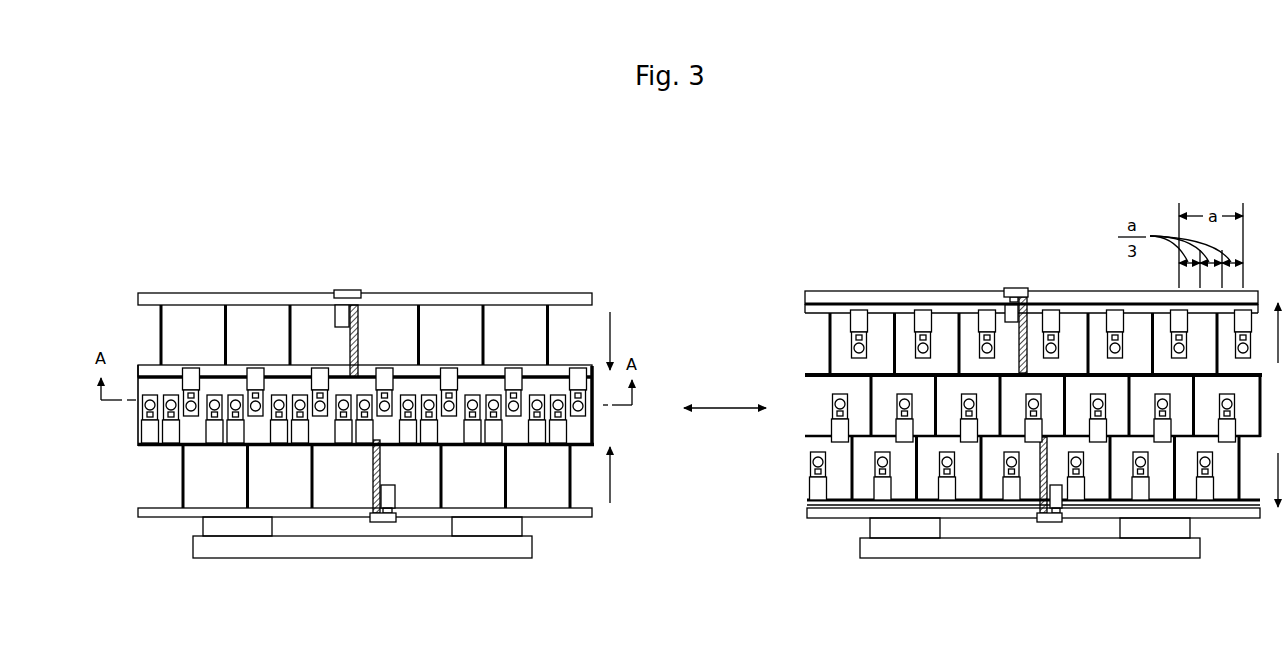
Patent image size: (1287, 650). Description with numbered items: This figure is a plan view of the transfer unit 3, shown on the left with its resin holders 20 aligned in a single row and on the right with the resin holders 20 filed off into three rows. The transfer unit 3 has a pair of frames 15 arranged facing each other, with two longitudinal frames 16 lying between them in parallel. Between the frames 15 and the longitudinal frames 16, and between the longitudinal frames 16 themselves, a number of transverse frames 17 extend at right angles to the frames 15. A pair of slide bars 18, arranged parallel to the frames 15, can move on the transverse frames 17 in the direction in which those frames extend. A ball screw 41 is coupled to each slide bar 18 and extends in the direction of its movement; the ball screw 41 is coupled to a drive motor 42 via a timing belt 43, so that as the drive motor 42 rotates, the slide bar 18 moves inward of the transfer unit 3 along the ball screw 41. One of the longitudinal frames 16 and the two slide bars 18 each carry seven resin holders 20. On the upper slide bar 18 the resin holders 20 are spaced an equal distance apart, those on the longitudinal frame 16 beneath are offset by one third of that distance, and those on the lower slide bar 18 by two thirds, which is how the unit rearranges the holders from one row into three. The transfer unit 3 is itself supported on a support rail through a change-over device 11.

The transfer unit 3 is at (683, 385).
The change-over device 11 is at (496, 552).
The frame 15 is at (566, 294).
The longitudinal frame 16 is at (823, 378).
The transverse frame 17 is at (160, 338).
The slide bar 18 is at (472, 367).
The resin holder 20 is at (146, 432).
The ball screw 41 is at (359, 330).
The drive motor 42 is at (340, 318).
The timing belt 43 is at (348, 290).